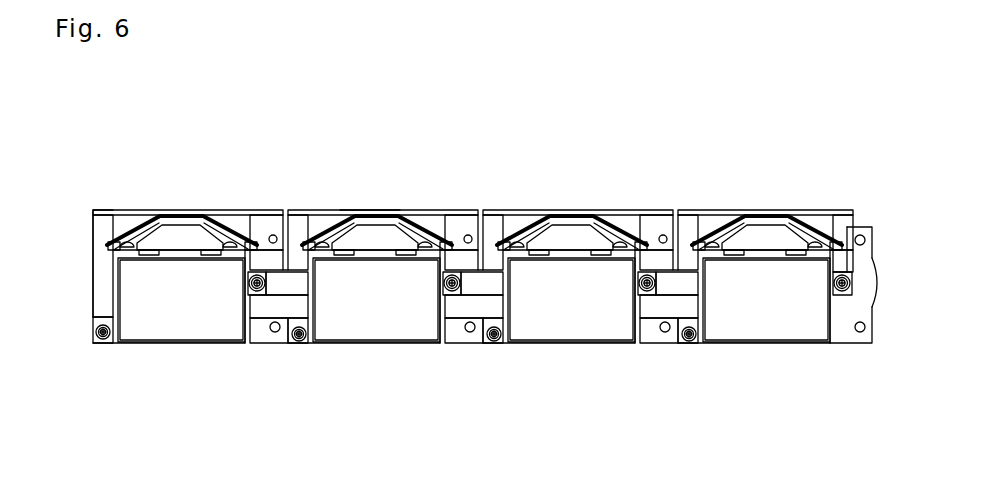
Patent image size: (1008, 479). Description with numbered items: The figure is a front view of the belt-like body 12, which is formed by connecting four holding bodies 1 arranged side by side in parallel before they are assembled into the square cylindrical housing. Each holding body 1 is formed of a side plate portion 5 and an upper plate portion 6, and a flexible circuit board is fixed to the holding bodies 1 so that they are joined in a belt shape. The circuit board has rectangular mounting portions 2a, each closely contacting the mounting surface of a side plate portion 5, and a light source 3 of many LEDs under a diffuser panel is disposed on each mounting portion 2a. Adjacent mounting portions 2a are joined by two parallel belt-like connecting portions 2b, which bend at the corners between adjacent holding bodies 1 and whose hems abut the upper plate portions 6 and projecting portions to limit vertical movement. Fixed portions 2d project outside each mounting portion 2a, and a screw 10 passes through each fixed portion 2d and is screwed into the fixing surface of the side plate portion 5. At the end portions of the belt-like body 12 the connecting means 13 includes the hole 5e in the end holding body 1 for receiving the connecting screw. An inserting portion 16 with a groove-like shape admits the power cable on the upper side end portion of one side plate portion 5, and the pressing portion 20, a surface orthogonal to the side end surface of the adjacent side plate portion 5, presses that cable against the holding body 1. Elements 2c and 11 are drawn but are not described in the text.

The holding body 1 is at (220, 350).
The mounting portion 2a is at (112, 299).
The connecting portion 2b is at (293, 307).
The roof plate 2c is at (150, 230).
The fixed portion 2d is at (111, 342).
The light source 3 is at (188, 300).
The side plate portion 5 is at (170, 345).
The hole 5e is at (274, 333).
The upper plate portion 6 is at (222, 211).
The screw 10 is at (97, 333).
The cap 11 is at (122, 249).
The belt-like body 12 is at (365, 211).
The connecting means 13 is at (869, 230).
The inserting portion 16 is at (856, 226).
The pressing portion 20 is at (98, 230).